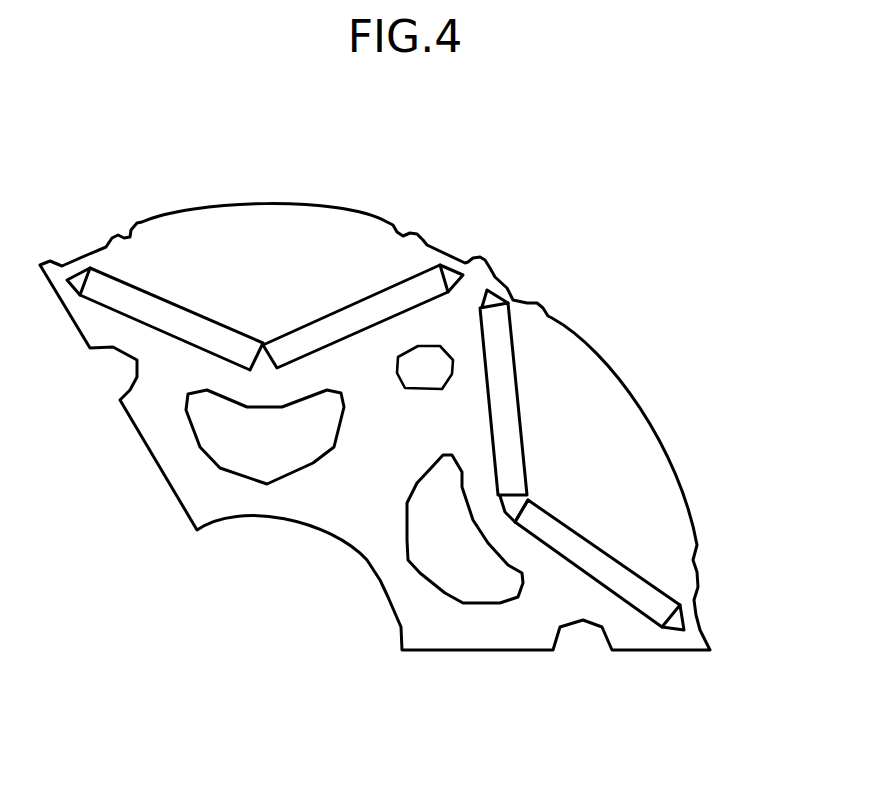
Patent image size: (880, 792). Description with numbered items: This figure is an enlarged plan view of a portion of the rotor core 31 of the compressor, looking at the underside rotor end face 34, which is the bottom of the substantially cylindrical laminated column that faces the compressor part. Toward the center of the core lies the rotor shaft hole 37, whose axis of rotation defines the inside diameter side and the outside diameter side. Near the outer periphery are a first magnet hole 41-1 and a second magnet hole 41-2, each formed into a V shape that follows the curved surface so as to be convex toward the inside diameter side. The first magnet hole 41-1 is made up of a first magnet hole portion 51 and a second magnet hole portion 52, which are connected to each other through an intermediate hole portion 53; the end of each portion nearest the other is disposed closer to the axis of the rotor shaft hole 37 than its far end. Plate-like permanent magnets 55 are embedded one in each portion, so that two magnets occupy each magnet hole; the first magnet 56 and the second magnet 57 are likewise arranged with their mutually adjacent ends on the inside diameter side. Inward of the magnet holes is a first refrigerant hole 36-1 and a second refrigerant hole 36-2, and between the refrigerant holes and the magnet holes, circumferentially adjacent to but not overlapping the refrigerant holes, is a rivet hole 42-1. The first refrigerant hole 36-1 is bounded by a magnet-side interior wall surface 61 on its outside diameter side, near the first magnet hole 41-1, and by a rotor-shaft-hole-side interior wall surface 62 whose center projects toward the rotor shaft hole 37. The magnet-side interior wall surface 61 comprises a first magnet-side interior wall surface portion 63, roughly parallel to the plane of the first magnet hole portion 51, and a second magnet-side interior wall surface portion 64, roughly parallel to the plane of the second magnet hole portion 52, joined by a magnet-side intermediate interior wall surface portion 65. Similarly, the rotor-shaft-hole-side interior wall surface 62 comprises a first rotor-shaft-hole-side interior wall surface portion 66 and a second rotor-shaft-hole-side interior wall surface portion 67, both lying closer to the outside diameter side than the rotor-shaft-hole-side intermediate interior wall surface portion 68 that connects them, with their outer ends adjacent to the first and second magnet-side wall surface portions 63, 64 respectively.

The rotor core 31 is at (490, 262).
The underside rotor end face 34 is at (468, 300).
The rotor shaft hole 37 is at (333, 528).
The first magnet hole 41-1 is at (107, 237).
The second magnet hole 41-2 is at (552, 318).
The rivet hole 42-1 is at (440, 393).
The first magnet hole portion 51 is at (113, 270).
The second magnet hole portion 52 is at (383, 289).
The intermediate hole portion 53 is at (270, 405).
The permanent magnet 55 is at (408, 432).
The first magnet 56 is at (158, 317).
The second magnet 57 is at (422, 291).
The magnet-side interior wall surface 61 is at (202, 392).
The rotor-shaft-hole-side interior wall surface 62 is at (194, 425).
The first magnet-side interior wall surface portion 63 is at (228, 398).
The second magnet-side interior wall surface portion 64 is at (322, 318).
The magnet-side intermediate interior wall surface portion 65 is at (317, 391).
The first rotor-shaft-hole-side interior wall surface portion 66 is at (220, 465).
The second rotor-shaft-hole-side interior wall surface portion 67 is at (307, 462).
The rotor-shaft-hole-side intermediate interior wall surface portion 68 is at (265, 484).
The first refrigerant hole 36-1 is at (289, 450).
The second refrigerant hole 36-2 is at (472, 557).